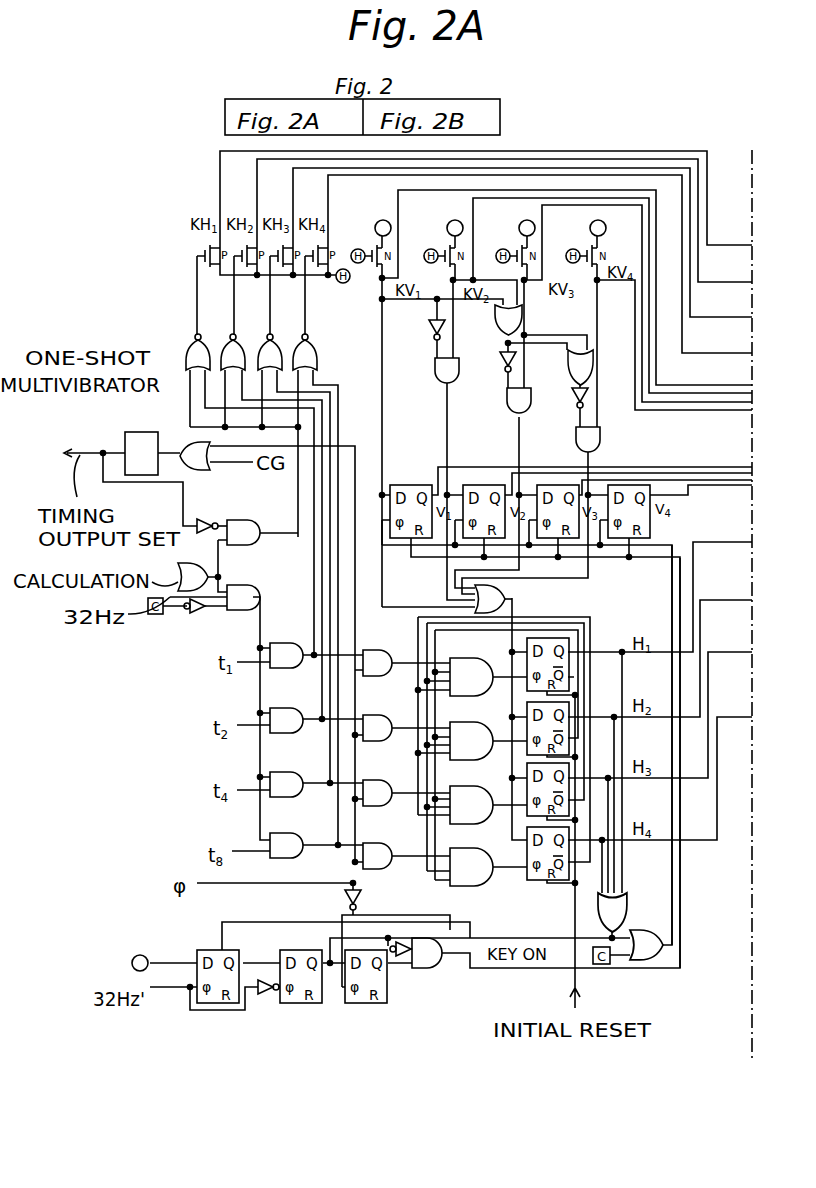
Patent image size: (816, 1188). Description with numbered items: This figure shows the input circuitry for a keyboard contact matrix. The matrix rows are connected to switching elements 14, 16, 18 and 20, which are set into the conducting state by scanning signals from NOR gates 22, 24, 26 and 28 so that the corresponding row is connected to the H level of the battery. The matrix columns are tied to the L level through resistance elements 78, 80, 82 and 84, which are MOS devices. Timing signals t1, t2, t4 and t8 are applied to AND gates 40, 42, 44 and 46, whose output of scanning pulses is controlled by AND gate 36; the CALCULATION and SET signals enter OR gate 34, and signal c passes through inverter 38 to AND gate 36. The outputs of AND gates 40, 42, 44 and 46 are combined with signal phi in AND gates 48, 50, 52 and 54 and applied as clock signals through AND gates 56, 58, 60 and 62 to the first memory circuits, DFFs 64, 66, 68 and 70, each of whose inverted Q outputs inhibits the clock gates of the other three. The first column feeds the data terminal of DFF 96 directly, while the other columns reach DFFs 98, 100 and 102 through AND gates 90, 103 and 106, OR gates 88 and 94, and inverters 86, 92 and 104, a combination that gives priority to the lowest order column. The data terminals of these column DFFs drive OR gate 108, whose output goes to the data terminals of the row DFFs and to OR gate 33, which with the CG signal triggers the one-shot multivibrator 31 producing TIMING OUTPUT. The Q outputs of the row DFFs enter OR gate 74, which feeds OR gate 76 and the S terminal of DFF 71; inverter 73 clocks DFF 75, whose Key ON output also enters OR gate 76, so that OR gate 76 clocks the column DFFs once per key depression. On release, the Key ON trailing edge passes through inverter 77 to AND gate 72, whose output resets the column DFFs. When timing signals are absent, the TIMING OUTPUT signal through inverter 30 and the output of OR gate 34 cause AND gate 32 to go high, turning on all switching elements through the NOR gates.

The switching element 14 is at (197, 282).
The switching element 16 is at (234, 282).
The switching element 18 is at (270, 282).
The switching element 20 is at (305, 282).
The NOR gate 22 is at (192, 336).
The NOR gate 24 is at (232, 338).
The NOR gate 26 is at (269, 338).
The NOR gate 28 is at (304, 338).
The inverter 30 is at (206, 518).
The one-shot multivibrator 31 is at (137, 431).
The AND gate 32 is at (244, 519).
The OR gate 33 is at (182, 440).
The OR gate 34 is at (184, 566).
The AND gate 36 is at (253, 597).
The inverter 38 is at (201, 614).
The AND gate 40 is at (284, 650).
The AND gate 42 is at (290, 713).
The AND gate 44 is at (292, 777).
The AND gate 46 is at (294, 838).
The AND gate 48 is at (378, 654).
The AND gate 50 is at (378, 718).
The AND gate 52 is at (378, 783).
The AND gate 54 is at (378, 846).
The AND gate 56 is at (470, 660).
The AND gate 58 is at (470, 726).
The AND gate 60 is at (470, 792).
The AND gate 62 is at (470, 860).
The data type flip-flop 64 is at (572, 645).
The data type flip-flop 66 is at (572, 710).
The data type flip-flop 68 is at (572, 770).
The data type flip-flop 70 is at (540, 880).
The data type flip-flop 71 is at (220, 1005).
The AND gate 72 is at (432, 968).
The inverter 73 is at (262, 995).
The OR gate 74 is at (627, 908).
The data type flip-flop 75 is at (304, 1005).
The OR gate 76 is at (655, 962).
The inverter 77 is at (400, 970).
The resistance element 78 is at (376, 242).
The resistance element 80 is at (448, 242).
The resistance element 82 is at (519, 242).
The resistance element 84 is at (590, 242).
The inverter 86 is at (433, 326).
The OR gate 88 is at (522, 322).
The AND gate 90 is at (442, 378).
The inverter 92 is at (502, 362).
The OR gate 94 is at (576, 364).
The data type flip-flop 96 is at (410, 485).
The data type flip-flop 98 is at (482, 485).
The data type flip-flop 100 is at (554, 485).
The data type flip-flop 102 is at (645, 485).
The AND gate 103 is at (507, 405).
The inverter 104 is at (586, 405).
The AND gate 106 is at (600, 448).
The OR gate 108 is at (508, 594).